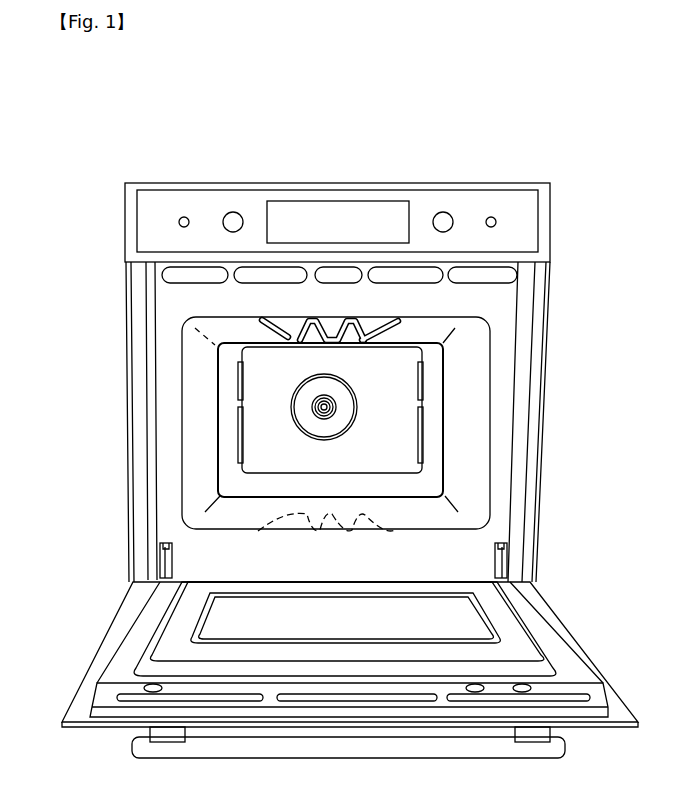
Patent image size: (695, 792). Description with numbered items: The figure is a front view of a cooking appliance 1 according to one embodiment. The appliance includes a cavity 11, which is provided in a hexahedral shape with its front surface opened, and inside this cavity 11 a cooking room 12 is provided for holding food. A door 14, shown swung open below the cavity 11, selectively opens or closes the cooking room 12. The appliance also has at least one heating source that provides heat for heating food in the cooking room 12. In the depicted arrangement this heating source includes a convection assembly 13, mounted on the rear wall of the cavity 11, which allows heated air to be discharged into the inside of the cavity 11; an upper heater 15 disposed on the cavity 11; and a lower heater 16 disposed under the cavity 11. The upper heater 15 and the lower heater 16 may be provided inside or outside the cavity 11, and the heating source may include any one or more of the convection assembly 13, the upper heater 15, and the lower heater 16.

The cooking appliance 1 is at (88, 152).
The cavity 11 is at (190, 338).
The cooking room 12 is at (217, 330).
The convection assembly 13 is at (292, 408).
The door 14 is at (98, 652).
The upper heater 15 is at (398, 322).
The lower heater 16 is at (395, 531).